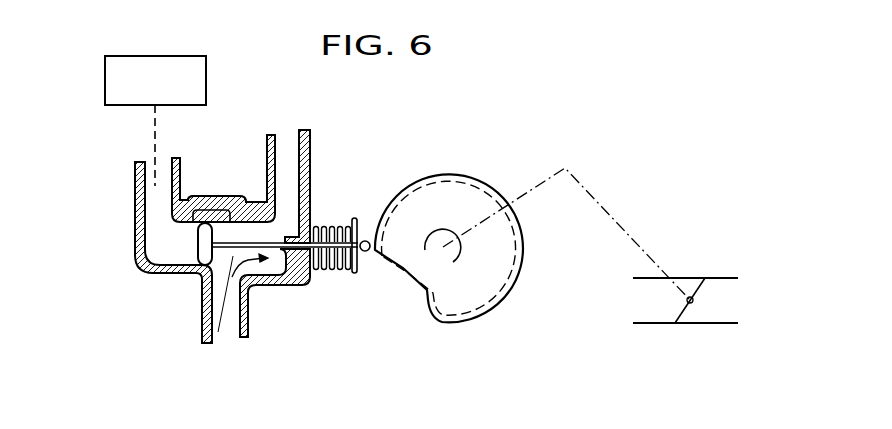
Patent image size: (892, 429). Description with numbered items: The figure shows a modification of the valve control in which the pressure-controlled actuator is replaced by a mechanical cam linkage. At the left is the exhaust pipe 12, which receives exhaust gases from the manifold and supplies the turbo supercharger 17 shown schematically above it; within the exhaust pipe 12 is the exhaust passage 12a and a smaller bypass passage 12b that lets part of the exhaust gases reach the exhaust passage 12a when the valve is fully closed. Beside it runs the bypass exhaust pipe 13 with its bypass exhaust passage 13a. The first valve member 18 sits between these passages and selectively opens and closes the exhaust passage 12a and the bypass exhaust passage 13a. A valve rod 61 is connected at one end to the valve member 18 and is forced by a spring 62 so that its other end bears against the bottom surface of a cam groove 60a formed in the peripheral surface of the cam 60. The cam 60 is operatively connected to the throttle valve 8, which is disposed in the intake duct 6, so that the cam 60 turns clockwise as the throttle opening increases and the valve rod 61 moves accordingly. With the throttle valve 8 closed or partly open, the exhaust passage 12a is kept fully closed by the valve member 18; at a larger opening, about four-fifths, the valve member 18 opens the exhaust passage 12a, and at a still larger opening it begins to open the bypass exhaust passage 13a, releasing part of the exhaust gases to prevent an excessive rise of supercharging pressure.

The turbo supercharger 17 is at (206, 75).
The exhaust pipe 12 is at (133, 185).
The exhaust passage 12a is at (145, 225).
The bypass passage 12b is at (219, 210).
The bypass exhaust pipe 13 is at (309, 180).
The bypass exhaust passage 13a is at (279, 260).
The first valve member 18 is at (201, 248).
The valve rod 61 is at (218, 251).
The spring 62 is at (331, 272).
The cam 60 is at (483, 297).
The cam groove 60a is at (516, 265).
The intake duct 6 is at (688, 280).
The throttle valve 8 is at (692, 303).